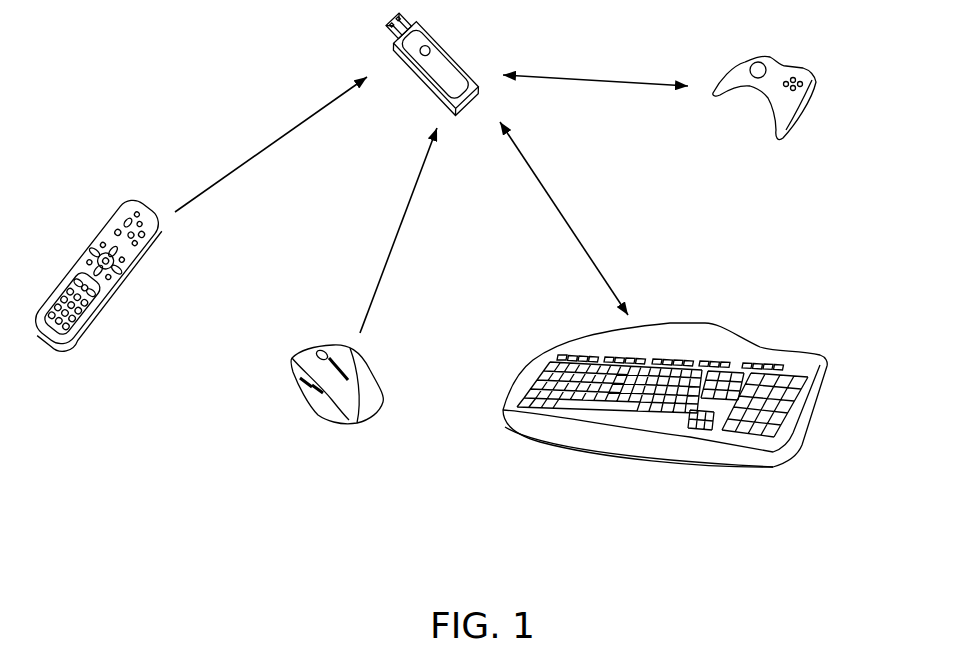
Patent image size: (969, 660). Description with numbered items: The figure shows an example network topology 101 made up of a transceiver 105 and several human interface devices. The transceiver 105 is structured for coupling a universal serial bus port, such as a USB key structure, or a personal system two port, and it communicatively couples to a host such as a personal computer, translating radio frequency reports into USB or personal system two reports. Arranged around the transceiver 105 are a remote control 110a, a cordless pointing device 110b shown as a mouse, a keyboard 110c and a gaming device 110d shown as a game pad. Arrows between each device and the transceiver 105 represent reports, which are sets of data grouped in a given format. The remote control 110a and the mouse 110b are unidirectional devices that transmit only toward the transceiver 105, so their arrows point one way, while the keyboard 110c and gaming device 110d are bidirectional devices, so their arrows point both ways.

The network topology 101 is at (656, 578).
The transceiver 105 is at (428, 28).
The remote control 110a is at (111, 223).
The cordless pointing device 110b is at (306, 352).
The keyboard 110c is at (827, 356).
The gaming device 110d is at (816, 83).